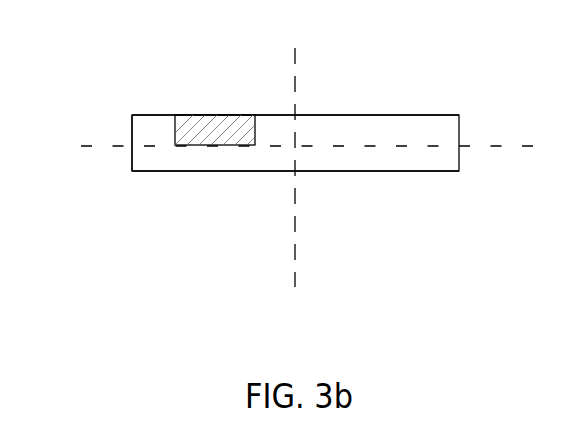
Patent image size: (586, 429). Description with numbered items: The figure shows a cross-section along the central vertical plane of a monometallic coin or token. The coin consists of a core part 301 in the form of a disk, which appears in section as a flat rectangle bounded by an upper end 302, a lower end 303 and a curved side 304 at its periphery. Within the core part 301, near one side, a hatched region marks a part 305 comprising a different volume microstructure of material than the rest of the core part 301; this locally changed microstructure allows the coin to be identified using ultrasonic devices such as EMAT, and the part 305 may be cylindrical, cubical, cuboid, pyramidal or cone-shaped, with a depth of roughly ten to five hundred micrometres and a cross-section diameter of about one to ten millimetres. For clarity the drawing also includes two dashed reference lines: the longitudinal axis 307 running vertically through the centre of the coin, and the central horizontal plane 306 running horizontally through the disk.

The core part 301 is at (332, 128).
The upper end 302 is at (322, 115).
The lower end 303 is at (308, 171).
The curved side 304 is at (132, 148).
The part comprising a different volume microstructure of material 305 is at (210, 145).
The central horizontal plane 306 is at (281, 147).
The longitudinal axis 307 is at (297, 150).